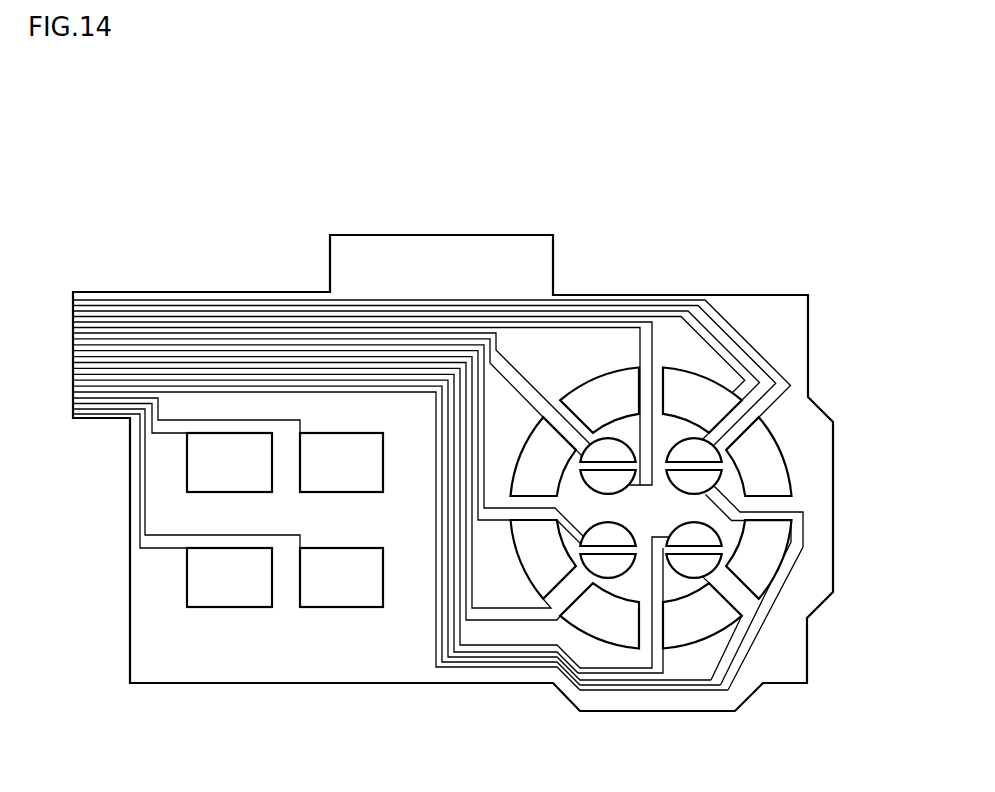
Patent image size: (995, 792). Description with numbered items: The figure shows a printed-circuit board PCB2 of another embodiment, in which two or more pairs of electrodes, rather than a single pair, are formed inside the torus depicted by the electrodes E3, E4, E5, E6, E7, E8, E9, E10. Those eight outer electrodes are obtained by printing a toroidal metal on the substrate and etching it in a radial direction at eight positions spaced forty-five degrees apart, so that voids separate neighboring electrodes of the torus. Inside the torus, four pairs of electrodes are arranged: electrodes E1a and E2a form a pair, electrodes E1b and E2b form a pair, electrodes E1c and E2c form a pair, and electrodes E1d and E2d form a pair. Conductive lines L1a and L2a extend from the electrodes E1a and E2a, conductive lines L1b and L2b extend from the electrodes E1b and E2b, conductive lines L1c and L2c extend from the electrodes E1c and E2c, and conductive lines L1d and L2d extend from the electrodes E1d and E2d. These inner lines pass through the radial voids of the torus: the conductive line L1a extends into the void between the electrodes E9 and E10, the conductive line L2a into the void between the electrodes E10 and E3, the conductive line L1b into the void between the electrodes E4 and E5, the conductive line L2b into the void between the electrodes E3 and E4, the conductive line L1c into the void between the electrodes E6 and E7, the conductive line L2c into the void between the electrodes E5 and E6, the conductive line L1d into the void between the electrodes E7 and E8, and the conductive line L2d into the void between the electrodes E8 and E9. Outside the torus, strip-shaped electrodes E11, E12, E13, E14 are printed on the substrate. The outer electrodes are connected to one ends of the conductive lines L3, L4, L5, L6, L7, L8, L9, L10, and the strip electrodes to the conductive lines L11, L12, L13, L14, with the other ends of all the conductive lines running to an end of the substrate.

The printed-circuit board PCB2 is at (228, 237).
The conductive line L1a is at (800, 395).
The conductive line L1b is at (660, 640).
The conductive line L1c is at (482, 503).
The conductive line L1d is at (527, 375).
The conductive line L2a is at (803, 523).
The conductive line L2b is at (783, 660).
The conductive line L2c is at (518, 610).
The conductive line L2d is at (635, 323).
The conductive line L3 is at (752, 643).
The conductive line L4 is at (642, 645).
The conductive line L5 is at (493, 620).
The conductive line L6 is at (477, 520).
The conductive line L7 is at (500, 381).
The conductive line L8 is at (567, 325).
The conductive line L9 is at (673, 312).
The conductive line L10 is at (793, 383).
The conductive line L11 is at (172, 432).
The conductive line L12 is at (302, 427).
The conductive line L13 is at (145, 525).
The conductive line L14 is at (140, 490).
The electrode E1a is at (712, 440).
The electrode E1b is at (710, 537).
The electrode E1c is at (590, 533).
The electrode E1d is at (607, 447).
The electrode E2a is at (710, 487).
The electrode E2b is at (712, 588).
The electrode E2c is at (606, 575).
The electrode E2d is at (598, 474).
The electrode E3 is at (775, 570).
The electrode E4 is at (690, 640).
The electrode E5 is at (585, 630).
The electrode E6 is at (528, 567).
The electrode E7 is at (530, 447).
The electrode E8 is at (608, 377).
The electrode E9 is at (697, 378).
The electrode E10 is at (780, 460).
The electrode E11 is at (230, 492).
The electrode E12 is at (352, 492).
The electrode E13 is at (228, 607).
The electrode E14 is at (335, 607).